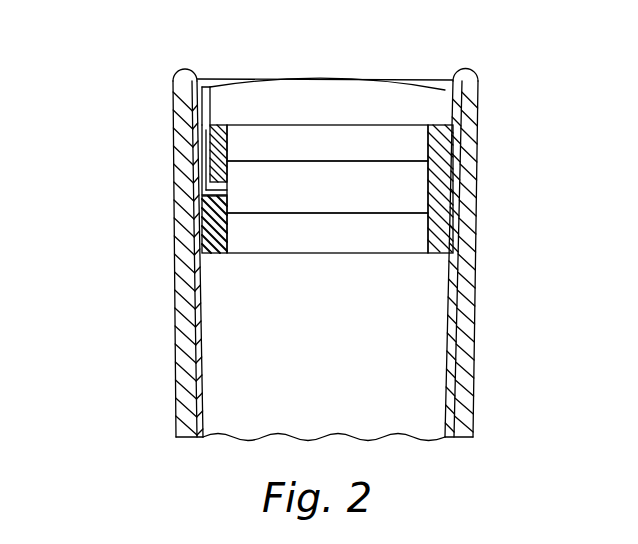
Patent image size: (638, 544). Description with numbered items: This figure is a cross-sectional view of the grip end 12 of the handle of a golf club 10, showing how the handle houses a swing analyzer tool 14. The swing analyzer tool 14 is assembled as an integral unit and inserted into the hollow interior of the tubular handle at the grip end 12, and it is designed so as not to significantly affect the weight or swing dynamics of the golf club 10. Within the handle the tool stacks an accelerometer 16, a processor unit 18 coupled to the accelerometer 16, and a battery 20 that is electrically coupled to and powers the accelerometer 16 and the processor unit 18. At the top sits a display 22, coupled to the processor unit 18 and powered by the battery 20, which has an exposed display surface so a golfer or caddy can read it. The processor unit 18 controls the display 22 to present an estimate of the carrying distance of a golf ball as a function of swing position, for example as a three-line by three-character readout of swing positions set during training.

The golf club 10 is at (173, 366).
The grip end 12 is at (175, 225).
The swing analyzer tool 14 is at (276, 76).
The accelerometer 16 is at (430, 234).
The processor unit 18 is at (422, 190).
The battery 20 is at (420, 141).
The display 22 is at (398, 91).